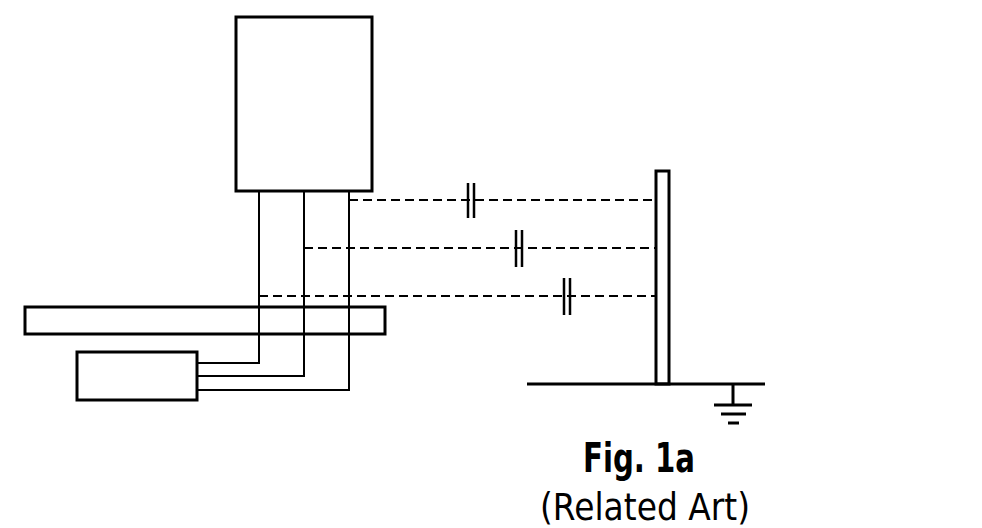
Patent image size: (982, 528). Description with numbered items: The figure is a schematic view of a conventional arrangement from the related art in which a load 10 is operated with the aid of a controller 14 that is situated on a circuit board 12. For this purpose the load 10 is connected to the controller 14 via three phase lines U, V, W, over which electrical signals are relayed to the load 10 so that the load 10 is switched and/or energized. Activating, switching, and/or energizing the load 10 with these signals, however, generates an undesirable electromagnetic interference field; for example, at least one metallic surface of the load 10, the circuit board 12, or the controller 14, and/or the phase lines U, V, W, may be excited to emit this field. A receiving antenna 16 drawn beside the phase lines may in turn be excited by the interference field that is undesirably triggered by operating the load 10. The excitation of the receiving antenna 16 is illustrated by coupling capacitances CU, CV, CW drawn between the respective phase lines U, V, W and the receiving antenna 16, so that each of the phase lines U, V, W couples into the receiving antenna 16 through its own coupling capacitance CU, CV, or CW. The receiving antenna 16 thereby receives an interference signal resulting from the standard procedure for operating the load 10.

The load 10 is at (236, 106).
The circuit board 12 is at (98, 307).
The controller 14 is at (144, 400).
The receiving antenna 16 is at (670, 207).
The phase line U is at (228, 365).
The phase line V is at (271, 378).
The phase line W is at (314, 392).
The coupling capacitance CU is at (571, 288).
The coupling capacitance CV is at (523, 240).
The coupling capacitance CW is at (475, 192).